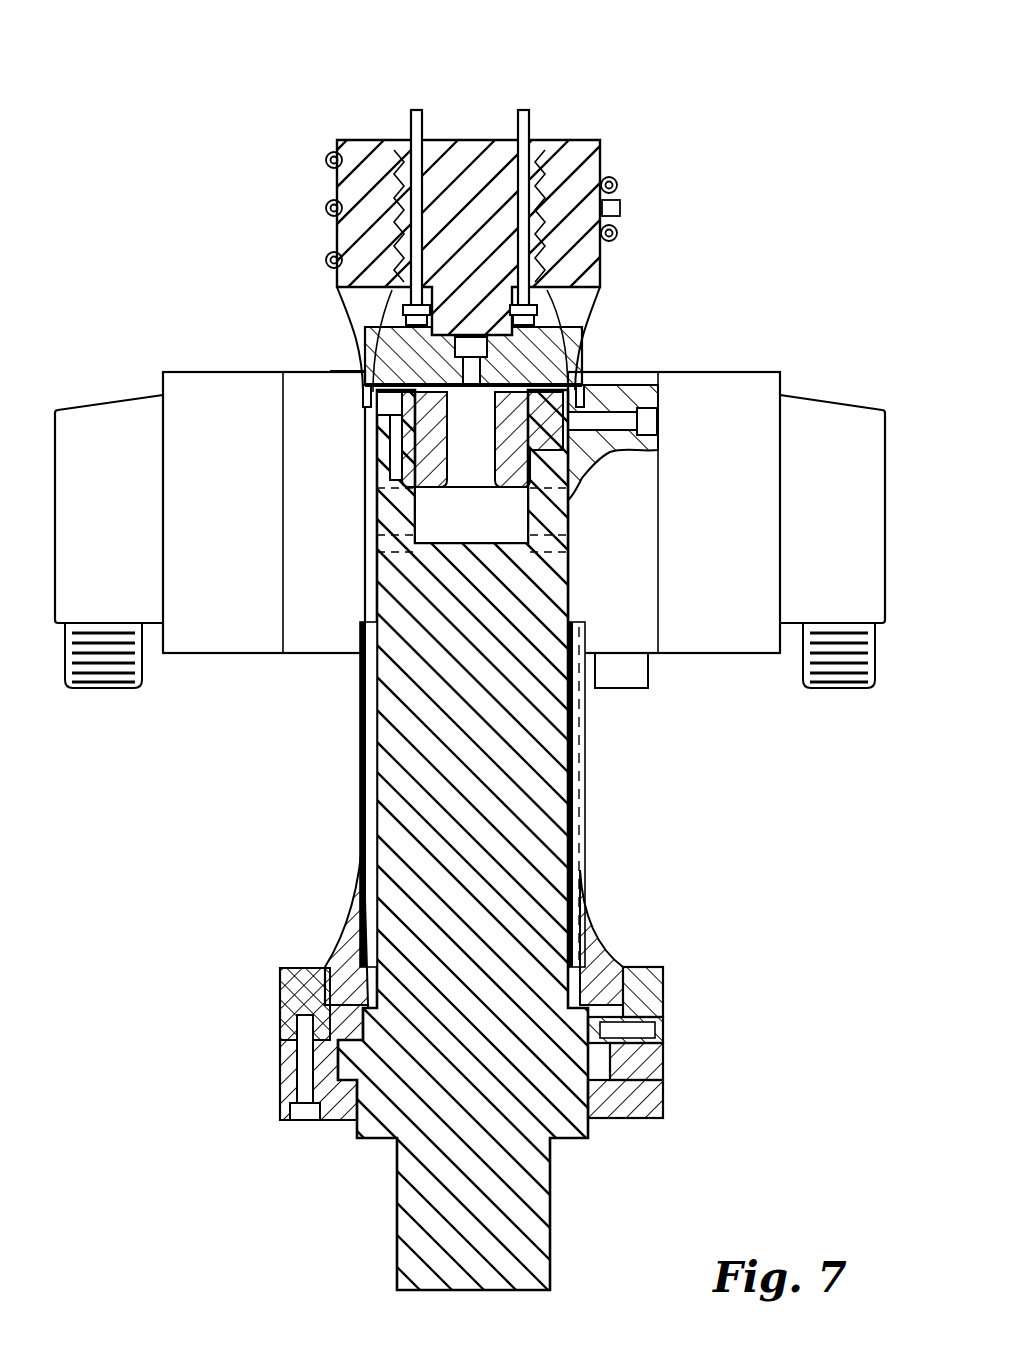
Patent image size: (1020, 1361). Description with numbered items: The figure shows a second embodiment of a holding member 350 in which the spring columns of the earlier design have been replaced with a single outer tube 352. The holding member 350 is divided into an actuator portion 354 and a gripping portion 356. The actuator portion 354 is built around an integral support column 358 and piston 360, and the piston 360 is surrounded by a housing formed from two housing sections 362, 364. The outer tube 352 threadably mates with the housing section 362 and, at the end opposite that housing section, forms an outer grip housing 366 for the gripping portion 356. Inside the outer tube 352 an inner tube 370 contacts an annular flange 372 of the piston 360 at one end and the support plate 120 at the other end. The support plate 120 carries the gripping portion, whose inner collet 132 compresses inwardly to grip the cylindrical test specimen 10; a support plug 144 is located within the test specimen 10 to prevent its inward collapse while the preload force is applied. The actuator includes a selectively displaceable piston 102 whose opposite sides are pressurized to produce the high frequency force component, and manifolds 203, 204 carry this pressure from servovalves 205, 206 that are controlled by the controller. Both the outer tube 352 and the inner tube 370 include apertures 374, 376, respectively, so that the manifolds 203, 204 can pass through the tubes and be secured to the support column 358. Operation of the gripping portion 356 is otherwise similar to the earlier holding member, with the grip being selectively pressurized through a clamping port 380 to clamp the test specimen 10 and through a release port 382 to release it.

The test specimen 10 is at (528, 123).
The piston 102 is at (441, 512).
The support plate 120 is at (545, 347).
The inner collet 132 is at (405, 140).
The support plug 144 is at (476, 155).
The manifold 203 is at (655, 653).
The manifold 204 is at (293, 653).
The servovalve 205 is at (780, 396).
The servovalve 206 is at (105, 395).
The holding member 350 is at (730, 178).
The outer tube 352 is at (590, 932).
The actuator portion 354 is at (742, 1001).
The gripping portion 356 is at (278, 232).
The support column 358 is at (540, 790).
The piston 360 is at (543, 1102).
The housing section 362 is at (650, 968).
The housing section 364 is at (663, 1100).
The outer grip housing 366 is at (360, 140).
The inner tube 370 is at (365, 830).
The annular flange 372 is at (362, 935).
The aperture 374 is at (364, 395).
The aperture 376 is at (605, 455).
The clamping port 380 is at (666, 1065).
The release port 382 is at (665, 1015).